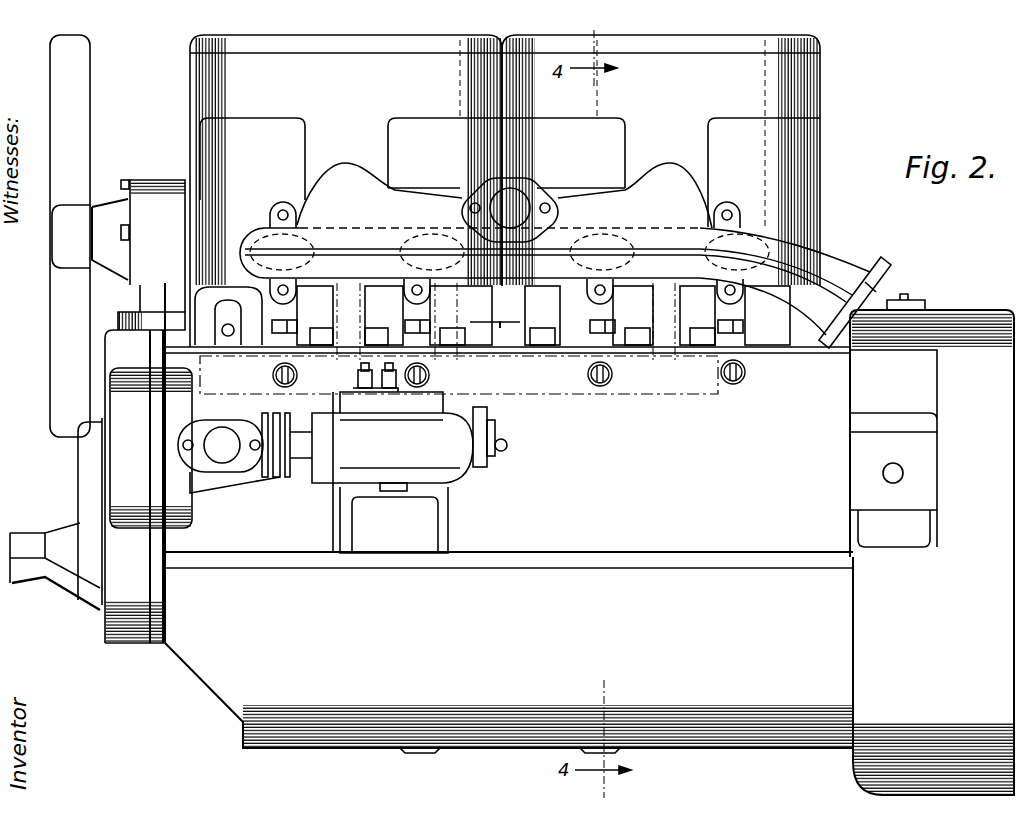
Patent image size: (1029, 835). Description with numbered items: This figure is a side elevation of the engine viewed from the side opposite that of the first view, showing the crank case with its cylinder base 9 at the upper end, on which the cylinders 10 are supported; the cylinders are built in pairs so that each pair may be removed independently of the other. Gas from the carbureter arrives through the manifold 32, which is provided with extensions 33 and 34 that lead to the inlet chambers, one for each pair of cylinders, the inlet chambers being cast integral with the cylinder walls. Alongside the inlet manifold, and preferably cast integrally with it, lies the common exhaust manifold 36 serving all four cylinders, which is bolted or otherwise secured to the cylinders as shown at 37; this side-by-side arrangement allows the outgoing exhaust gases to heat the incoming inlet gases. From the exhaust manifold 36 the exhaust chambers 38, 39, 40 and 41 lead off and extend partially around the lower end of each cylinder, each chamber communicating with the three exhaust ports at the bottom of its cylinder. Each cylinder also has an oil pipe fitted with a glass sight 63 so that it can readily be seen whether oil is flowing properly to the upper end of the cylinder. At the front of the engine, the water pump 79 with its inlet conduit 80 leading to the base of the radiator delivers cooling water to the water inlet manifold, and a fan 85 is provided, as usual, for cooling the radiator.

The cylinder base 9 is at (512, 487).
The cylinder 10 is at (205, 136).
The manifold 32 is at (522, 192).
The extension 33 is at (407, 198).
The extension 34 is at (613, 200).
The exhaust manifold 36 is at (828, 250).
The bolting of exhaust manifold 37 is at (733, 213).
The exhaust chamber 38 is at (303, 256).
The exhaust chamber 39 is at (450, 250).
The exhaust chamber 40 is at (622, 248).
The exhaust chamber 41 is at (772, 238).
The glass sight 63 is at (293, 326).
The pump 79 is at (118, 422).
The inlet conduit 80 is at (92, 482).
The fan 85 is at (93, 113).